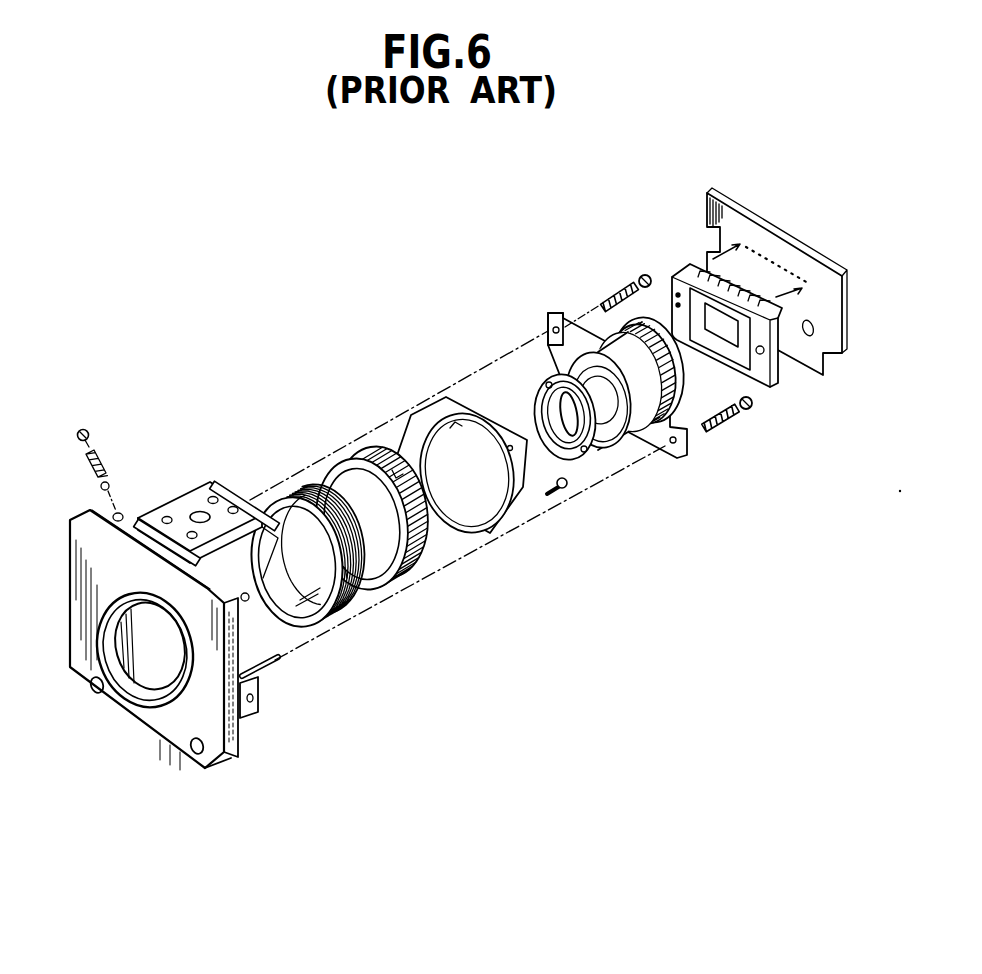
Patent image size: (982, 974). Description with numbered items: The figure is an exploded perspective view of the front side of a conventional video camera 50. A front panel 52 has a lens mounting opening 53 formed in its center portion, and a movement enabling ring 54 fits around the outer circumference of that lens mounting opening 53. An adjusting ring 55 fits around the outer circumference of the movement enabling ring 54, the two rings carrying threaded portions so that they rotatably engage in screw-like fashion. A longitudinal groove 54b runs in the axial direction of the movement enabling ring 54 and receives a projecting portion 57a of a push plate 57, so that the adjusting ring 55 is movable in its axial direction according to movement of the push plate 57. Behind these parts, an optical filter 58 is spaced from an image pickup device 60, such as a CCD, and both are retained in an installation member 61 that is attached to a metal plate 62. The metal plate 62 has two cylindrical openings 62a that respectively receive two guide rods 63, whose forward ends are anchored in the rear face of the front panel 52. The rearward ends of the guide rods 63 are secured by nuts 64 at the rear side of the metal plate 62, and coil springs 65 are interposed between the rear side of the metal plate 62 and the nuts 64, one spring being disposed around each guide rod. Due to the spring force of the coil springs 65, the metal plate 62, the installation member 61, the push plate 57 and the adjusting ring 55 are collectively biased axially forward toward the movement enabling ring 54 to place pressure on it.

The video camera 50 is at (558, 600).
The front panel 52 is at (233, 757).
The lens mounting opening 53 is at (152, 700).
The movement enabling ring 54 is at (278, 503).
The longitudinal groove 54b is at (312, 490).
The adjusting ring 55 is at (362, 457).
The push plate 57 is at (423, 405).
The projecting portion 57a is at (447, 428).
The optical filter 58 is at (608, 443).
The image pickup device 60 is at (768, 388).
The installation member 61 is at (655, 447).
The metal plate 62 is at (688, 450).
The cylindrical openings 62a is at (560, 316).
The guide rods 63 is at (262, 673).
The nuts 64 is at (644, 276).
The coil springs 65 is at (610, 292).